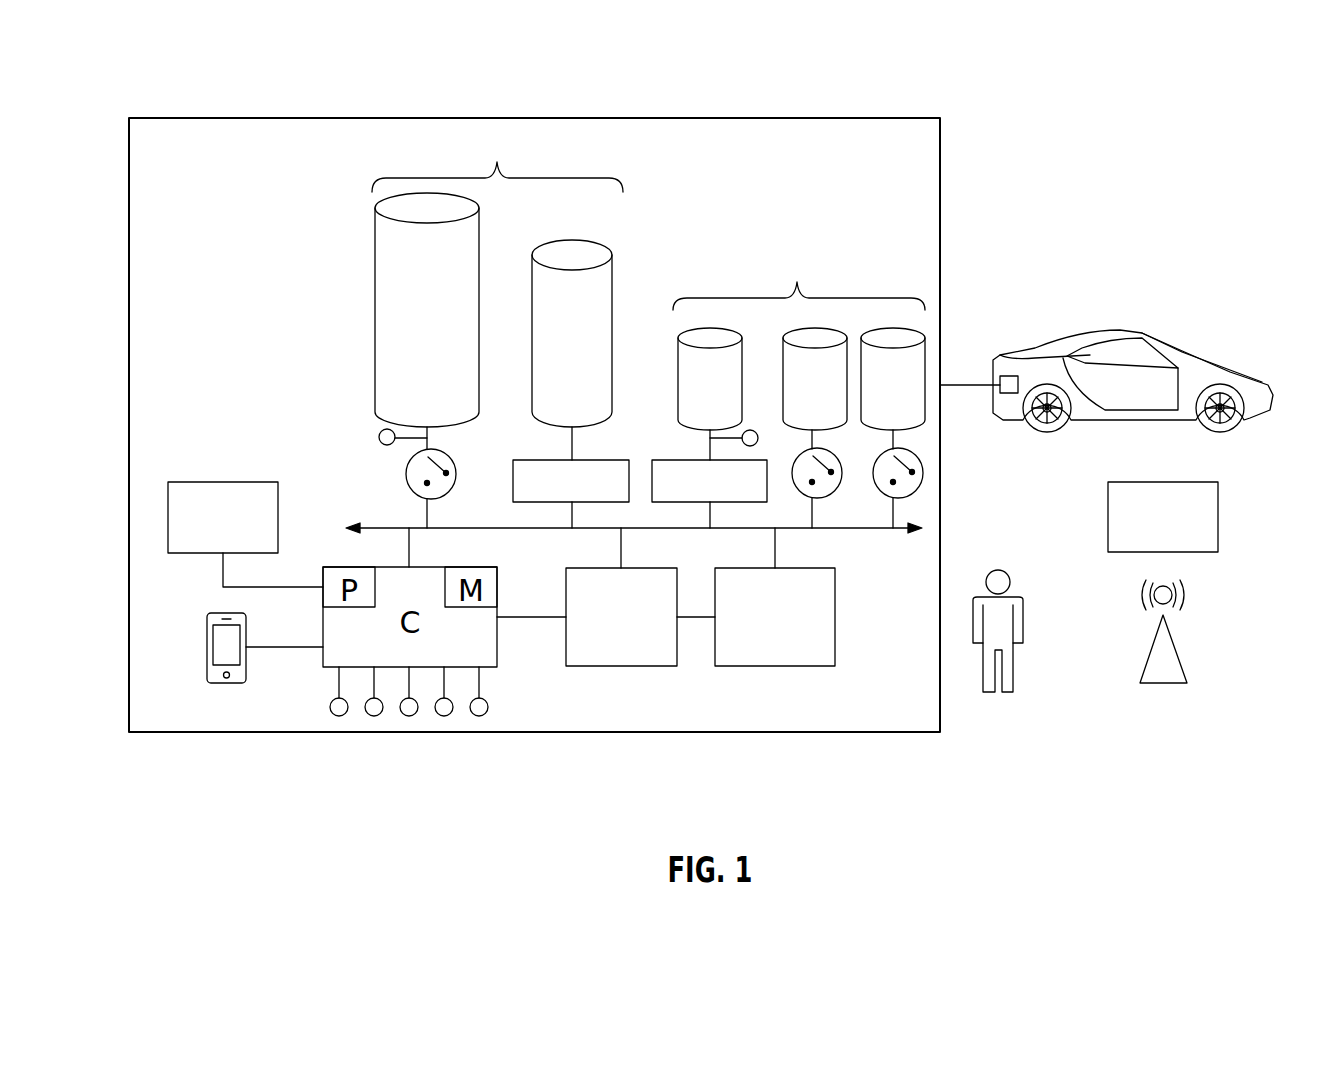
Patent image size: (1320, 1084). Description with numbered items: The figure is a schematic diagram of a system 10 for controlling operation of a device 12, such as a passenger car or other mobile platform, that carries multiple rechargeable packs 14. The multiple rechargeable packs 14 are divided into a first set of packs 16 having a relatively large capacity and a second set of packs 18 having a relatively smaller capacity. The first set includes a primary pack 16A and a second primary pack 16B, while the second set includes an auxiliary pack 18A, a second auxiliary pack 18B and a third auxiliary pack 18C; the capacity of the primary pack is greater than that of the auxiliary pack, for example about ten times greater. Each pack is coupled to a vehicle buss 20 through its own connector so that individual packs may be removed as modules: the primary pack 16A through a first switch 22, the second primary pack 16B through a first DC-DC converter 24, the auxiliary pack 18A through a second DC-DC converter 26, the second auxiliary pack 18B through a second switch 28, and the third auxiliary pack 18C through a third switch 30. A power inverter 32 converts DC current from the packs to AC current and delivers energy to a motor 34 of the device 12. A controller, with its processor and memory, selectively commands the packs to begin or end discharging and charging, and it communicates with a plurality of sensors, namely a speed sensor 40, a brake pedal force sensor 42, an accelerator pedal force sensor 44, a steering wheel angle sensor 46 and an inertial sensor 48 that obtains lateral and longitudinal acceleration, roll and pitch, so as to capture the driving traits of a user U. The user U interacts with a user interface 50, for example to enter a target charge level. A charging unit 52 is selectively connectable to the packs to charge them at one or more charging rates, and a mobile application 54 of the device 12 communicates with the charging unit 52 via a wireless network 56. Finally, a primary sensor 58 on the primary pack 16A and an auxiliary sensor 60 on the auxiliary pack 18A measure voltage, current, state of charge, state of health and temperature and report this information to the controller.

The system 10 is at (1000, 193).
The device 12 is at (1172, 305).
The multiple rechargeable packs 14 is at (680, 225).
The first set of packs 16 is at (497, 158).
The primary pack 16A is at (403, 338).
The second primary pack 16B is at (548, 356).
The second set of packs 18 is at (799, 278).
The auxiliary pack 18A is at (686, 393).
The second auxiliary pack 18B is at (791, 393).
The third auxiliary pack 18C is at (869, 393).
The vehicle buss 20 is at (843, 531).
The first switch 22 is at (407, 476).
The first DC-DC converter 24 is at (556, 460).
The second DC-DC converter 26 is at (695, 460).
The second switch 28 is at (832, 452).
The third switch 30 is at (917, 453).
The power inverter 32 is at (775, 666).
The motor 34 is at (622, 666).
The speed sensor 40 is at (339, 716).
The brake pedal force sensor 42 is at (374, 716).
The accelerator pedal force sensor 44 is at (409, 716).
The steering wheel angle sensor 46 is at (444, 716).
The inertial sensor 48 is at (479, 716).
The user interface 50 is at (205, 482).
The charging unit 52 is at (1185, 482).
The mobile application 54 is at (220, 613).
The wireless network 56 is at (1204, 638).
The primary sensor 58 is at (380, 443).
The auxiliary sensor 60 is at (751, 430).
The user U is at (1014, 556).